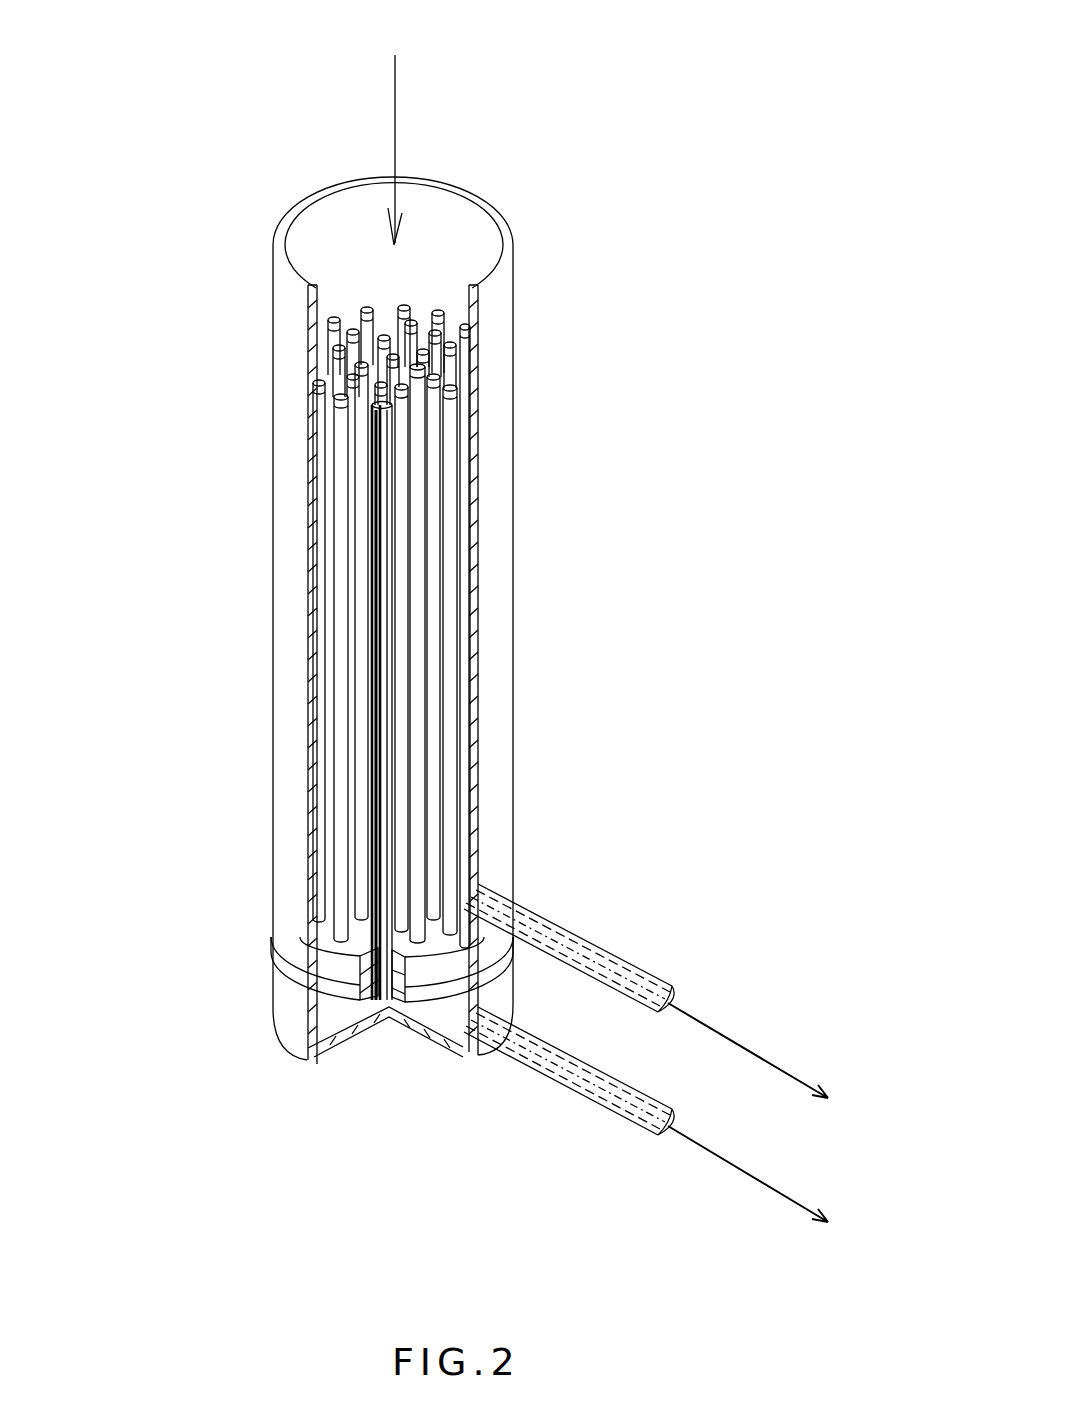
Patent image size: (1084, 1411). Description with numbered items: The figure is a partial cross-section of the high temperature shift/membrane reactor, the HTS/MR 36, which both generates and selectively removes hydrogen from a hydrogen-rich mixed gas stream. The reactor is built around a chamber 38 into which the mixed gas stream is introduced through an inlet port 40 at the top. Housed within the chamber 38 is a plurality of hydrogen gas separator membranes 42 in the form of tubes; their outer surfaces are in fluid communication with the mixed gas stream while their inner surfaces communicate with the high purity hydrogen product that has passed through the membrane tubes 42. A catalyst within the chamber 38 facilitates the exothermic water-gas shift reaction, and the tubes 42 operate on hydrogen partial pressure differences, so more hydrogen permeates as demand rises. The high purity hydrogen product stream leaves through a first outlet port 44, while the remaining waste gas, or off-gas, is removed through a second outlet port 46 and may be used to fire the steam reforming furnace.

The high temperature shift/membrane reactor 36 is at (307, 150).
The chamber 38 is at (492, 377).
The inlet port 40 is at (460, 240).
The hydrogen gas separator membranes 42 is at (405, 474).
The first outlet port 44 is at (565, 1082).
The second outlet port 46 is at (577, 945).